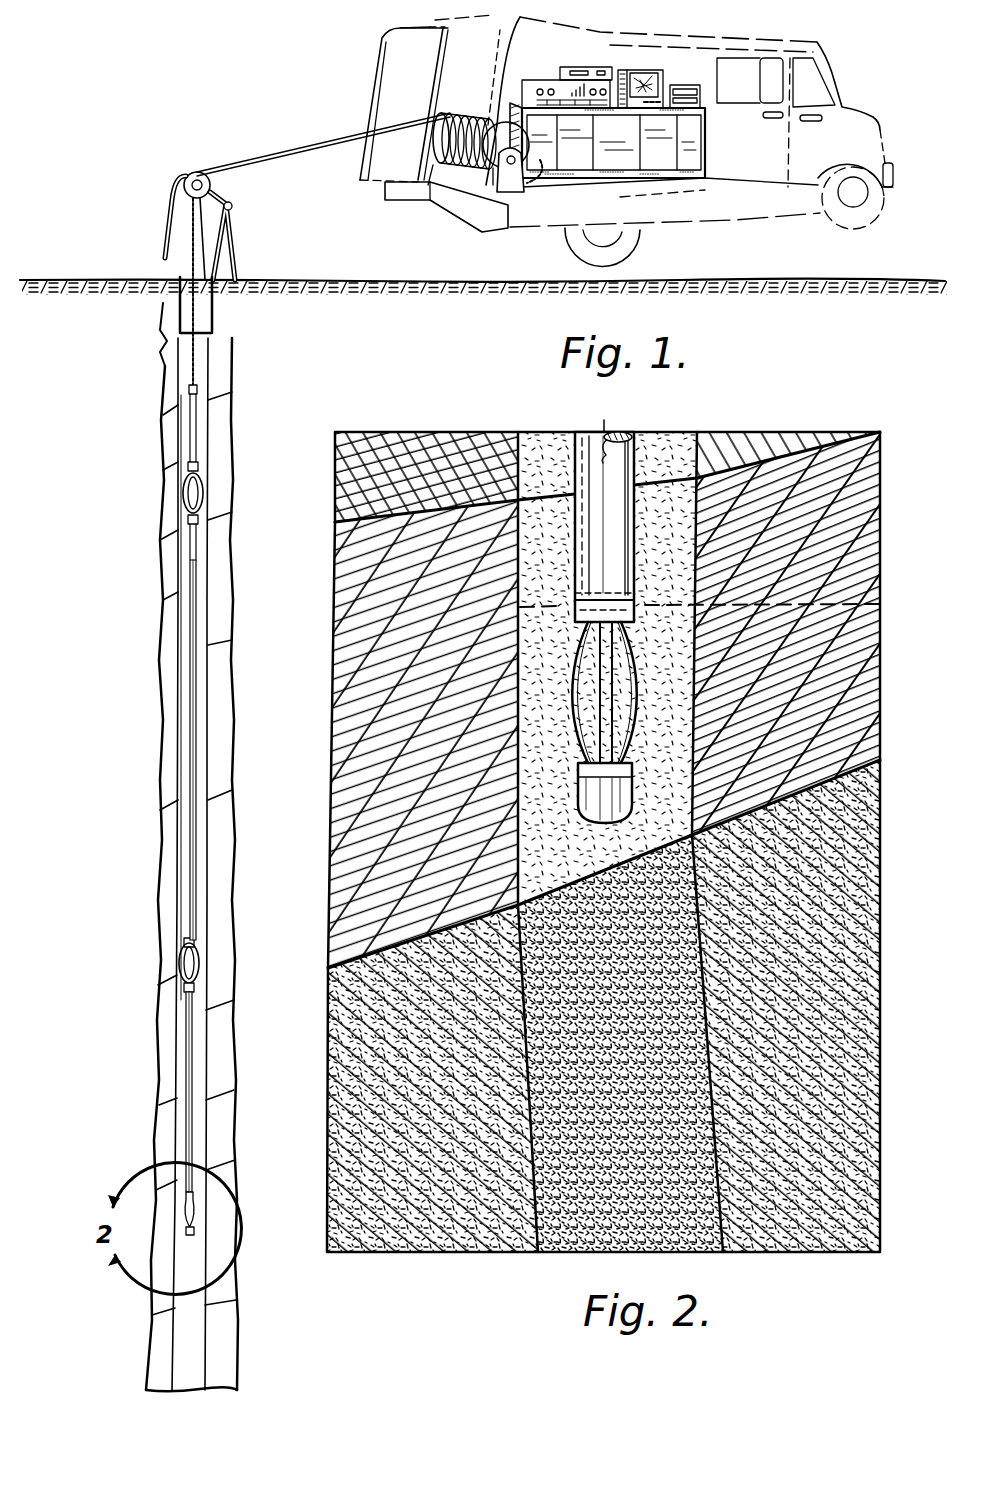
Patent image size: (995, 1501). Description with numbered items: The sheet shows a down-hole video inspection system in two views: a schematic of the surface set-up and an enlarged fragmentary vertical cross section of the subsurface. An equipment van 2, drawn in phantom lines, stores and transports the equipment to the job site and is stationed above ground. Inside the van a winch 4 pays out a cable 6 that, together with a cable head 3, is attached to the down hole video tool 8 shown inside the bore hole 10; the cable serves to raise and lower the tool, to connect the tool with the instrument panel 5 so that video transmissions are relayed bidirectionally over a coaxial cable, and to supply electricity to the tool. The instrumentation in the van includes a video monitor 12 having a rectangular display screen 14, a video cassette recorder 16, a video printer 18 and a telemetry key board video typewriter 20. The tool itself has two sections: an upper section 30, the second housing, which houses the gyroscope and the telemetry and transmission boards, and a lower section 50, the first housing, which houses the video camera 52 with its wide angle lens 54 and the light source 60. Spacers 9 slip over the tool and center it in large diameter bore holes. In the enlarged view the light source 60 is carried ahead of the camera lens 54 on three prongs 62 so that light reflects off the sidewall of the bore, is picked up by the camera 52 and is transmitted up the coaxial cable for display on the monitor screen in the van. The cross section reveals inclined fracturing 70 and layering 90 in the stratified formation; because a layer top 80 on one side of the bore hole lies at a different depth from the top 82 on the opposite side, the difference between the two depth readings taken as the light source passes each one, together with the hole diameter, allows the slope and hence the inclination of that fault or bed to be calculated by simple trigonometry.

In FIG. 1, the equipment van 2 is at (410, 64).
In FIG. 1, the cable head 3 is at (190, 418).
In FIG. 1, the winch 4 is at (470, 165).
In FIG. 1, the instrument panel 5 is at (688, 183).
In FIG. 1, the cable 6 is at (305, 150).
In FIG. 1, the down hole video tool 8 is at (182, 670).
In FIG. 2, the down hole video tool 8 is at (640, 433).
In FIG. 1, the spacers 9 is at (183, 494).
In FIG. 1, the bore hole 10 is at (200, 352).
In FIG. 2, the bore hole 10 is at (522, 438).
In FIG. 1, the video monitor 12 is at (650, 76).
In FIG. 1, the display screen 14 is at (633, 74).
In FIG. 1, the video cassette recorder 16 is at (586, 82).
In FIG. 1, the video printer 18 is at (690, 85).
In FIG. 1, the telemetry key board video typewriter 20 is at (628, 54).
In FIG. 1, the upper section 30 is at (190, 590).
In FIG. 1, the lower section 50 is at (187, 1058).
In FIG. 2, the lower section 50 is at (614, 432).
In FIG. 2, the video camera 52 is at (595, 432).
In FIG. 2, the camera wide angle lens 54 is at (880, 606).
In FIG. 1, the light source 60 is at (196, 1234).
In FIG. 2, the light source 60 is at (580, 798).
In FIG. 1, the three prongs 62 is at (195, 1213).
In FIG. 2, the three prongs 62 is at (640, 742).
In FIG. 2, the fracturing 70 is at (385, 718).
In FIG. 2, the top of layer 80 is at (382, 911).
In FIG. 2, the top of layer on opposite side 82 is at (740, 843).
In FIG. 2, the layering 90 is at (845, 1050).